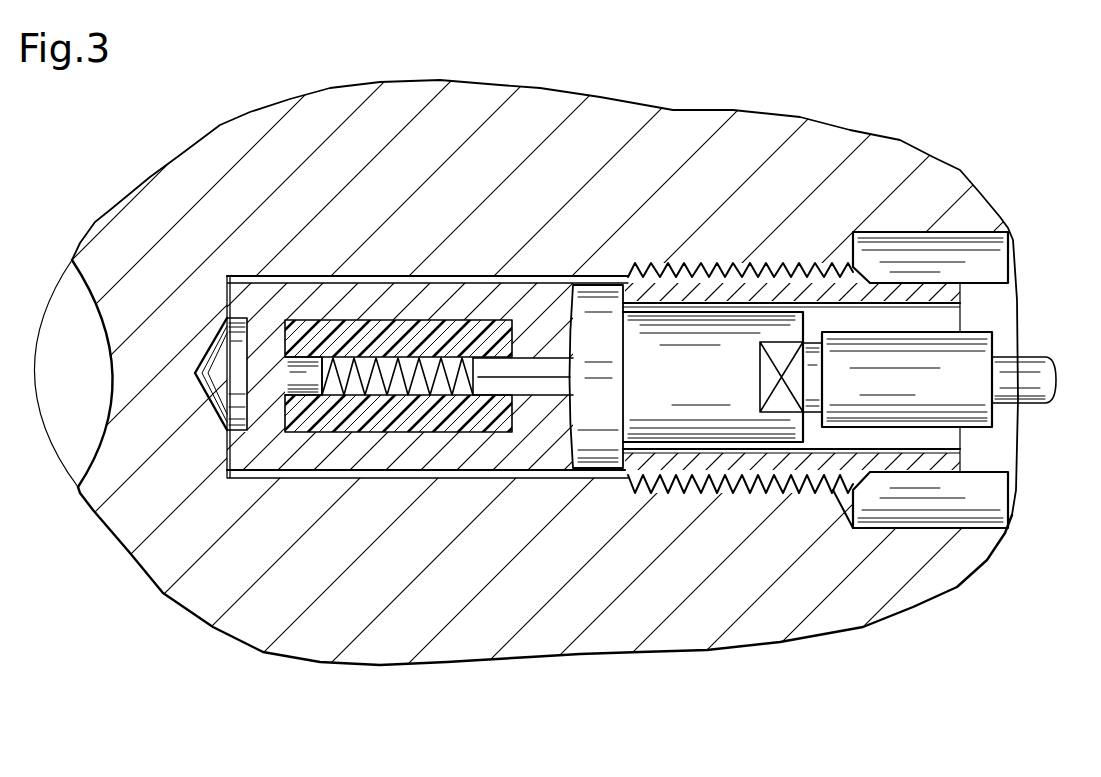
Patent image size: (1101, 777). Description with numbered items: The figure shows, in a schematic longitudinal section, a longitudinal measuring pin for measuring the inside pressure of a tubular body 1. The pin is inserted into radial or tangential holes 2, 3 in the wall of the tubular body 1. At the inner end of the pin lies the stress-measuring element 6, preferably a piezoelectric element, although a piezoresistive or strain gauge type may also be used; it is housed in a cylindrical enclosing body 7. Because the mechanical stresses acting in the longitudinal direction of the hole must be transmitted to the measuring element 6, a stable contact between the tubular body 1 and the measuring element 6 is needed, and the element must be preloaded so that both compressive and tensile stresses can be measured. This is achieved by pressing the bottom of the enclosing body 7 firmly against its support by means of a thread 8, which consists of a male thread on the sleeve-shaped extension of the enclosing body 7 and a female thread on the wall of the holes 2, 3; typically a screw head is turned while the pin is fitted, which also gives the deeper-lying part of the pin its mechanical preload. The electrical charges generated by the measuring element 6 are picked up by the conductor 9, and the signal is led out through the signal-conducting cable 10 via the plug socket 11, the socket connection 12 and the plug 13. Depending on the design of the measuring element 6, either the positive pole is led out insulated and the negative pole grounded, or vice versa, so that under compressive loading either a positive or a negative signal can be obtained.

The tubular body 1 is at (400, 128).
The hole 2 is at (798, 262).
The hole 3 is at (798, 262).
The measuring element 6 is at (352, 412).
The enclosing body 7 is at (318, 310).
The thread 8 is at (721, 262).
The conductor 9 is at (436, 357).
The signal-conducting cable 10 is at (532, 357).
The plug socket 11 is at (693, 328).
The socket connection 12 is at (781, 400).
The plug 13 is at (967, 352).